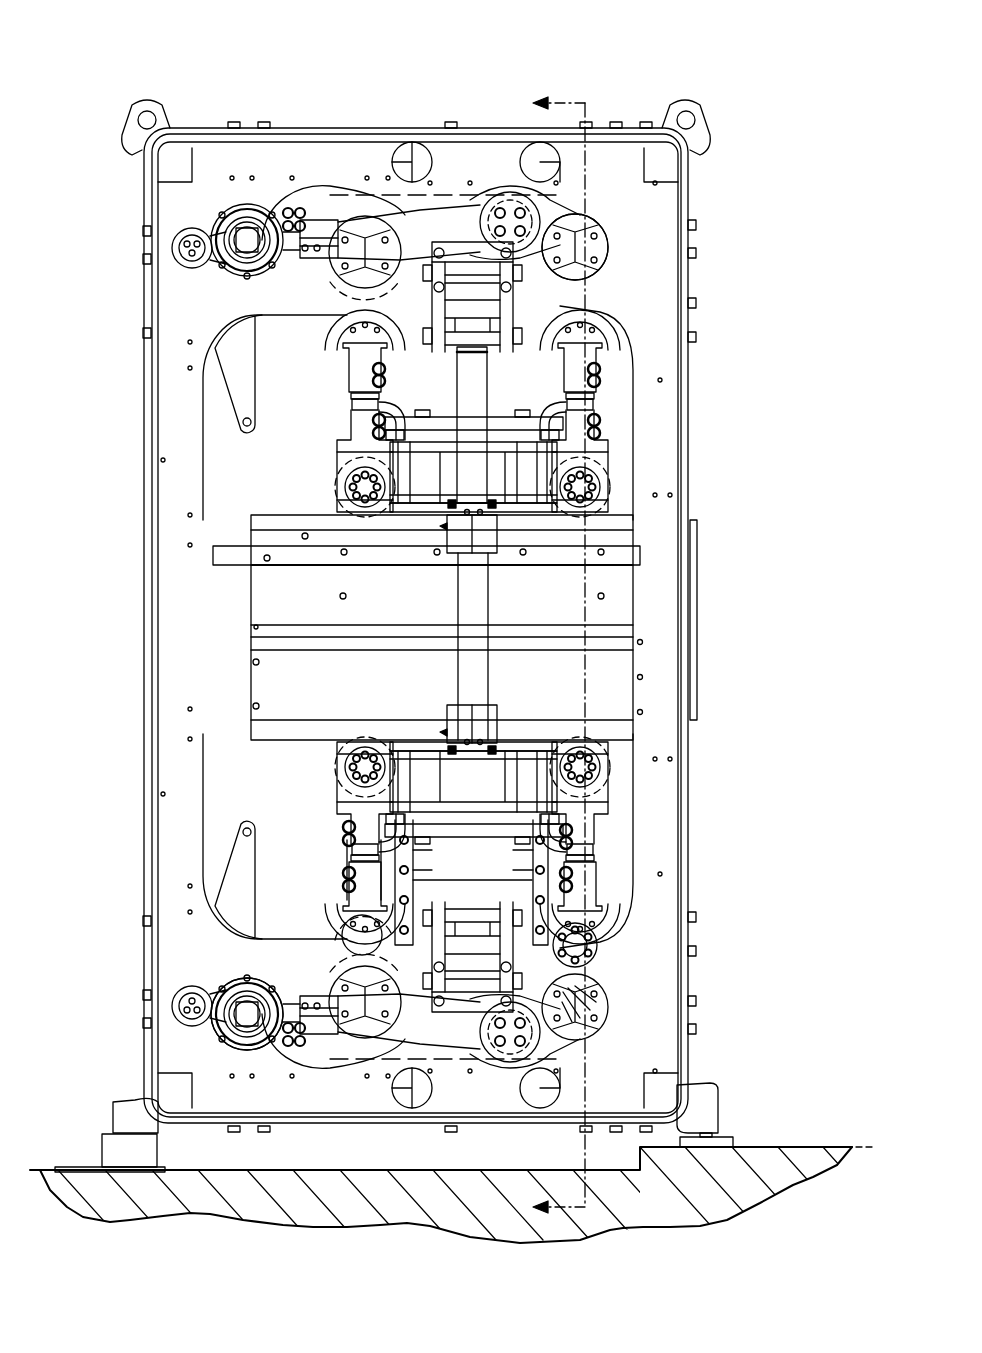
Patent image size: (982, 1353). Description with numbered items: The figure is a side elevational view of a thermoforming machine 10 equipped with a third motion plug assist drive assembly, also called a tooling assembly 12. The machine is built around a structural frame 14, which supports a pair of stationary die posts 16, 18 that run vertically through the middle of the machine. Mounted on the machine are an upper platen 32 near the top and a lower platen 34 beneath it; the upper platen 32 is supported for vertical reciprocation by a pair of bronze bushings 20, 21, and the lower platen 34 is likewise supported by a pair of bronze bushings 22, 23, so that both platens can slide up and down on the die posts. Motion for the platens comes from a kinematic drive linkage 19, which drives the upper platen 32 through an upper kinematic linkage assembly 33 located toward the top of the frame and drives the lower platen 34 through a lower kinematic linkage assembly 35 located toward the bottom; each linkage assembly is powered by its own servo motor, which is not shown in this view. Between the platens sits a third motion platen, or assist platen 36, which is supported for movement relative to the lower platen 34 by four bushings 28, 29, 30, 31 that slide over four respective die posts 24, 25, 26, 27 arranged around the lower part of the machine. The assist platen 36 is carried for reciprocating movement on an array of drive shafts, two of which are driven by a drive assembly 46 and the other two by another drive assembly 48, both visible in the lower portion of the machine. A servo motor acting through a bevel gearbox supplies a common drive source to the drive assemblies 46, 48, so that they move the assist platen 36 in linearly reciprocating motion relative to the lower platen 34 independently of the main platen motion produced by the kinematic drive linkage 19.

The thermoforming machine 10 is at (745, 120).
The tooling assembly 12 is at (310, 875).
The structural frame 14 is at (690, 412).
The stationary die post 16 is at (512, 425).
The stationary die post 18 is at (487, 405).
The kinematic drive linkage 19 is at (313, 165).
The bronze bushing 20 is at (426, 627).
The bronze bushing 21 is at (462, 545).
The bronze bushing 22 is at (426, 711).
The bronze bushing 23 is at (462, 725).
The die post 24 is at (307, 888).
The die post 25 is at (343, 880).
The die post 26 is at (667, 878).
The die post 27 is at (575, 875).
The bushing 28 is at (305, 841).
The bushing 29 is at (343, 841).
The bushing 30 is at (663, 827).
The bushing 31 is at (575, 848).
The upper platen 32 is at (290, 510).
The upper kinematic linkage assembly 33 is at (640, 250).
The lower platen 34 is at (424, 676).
The third motion platen 36 is at (293, 745).
The lower kinematic linkage assembly 35 is at (245, 1060).
The drive assembly 46 is at (378, 926).
The drive assembly 48 is at (562, 935).